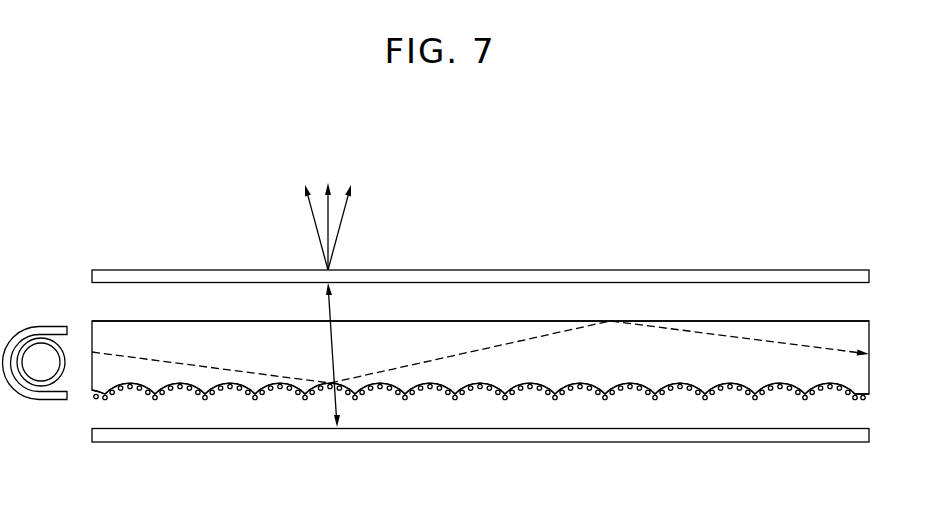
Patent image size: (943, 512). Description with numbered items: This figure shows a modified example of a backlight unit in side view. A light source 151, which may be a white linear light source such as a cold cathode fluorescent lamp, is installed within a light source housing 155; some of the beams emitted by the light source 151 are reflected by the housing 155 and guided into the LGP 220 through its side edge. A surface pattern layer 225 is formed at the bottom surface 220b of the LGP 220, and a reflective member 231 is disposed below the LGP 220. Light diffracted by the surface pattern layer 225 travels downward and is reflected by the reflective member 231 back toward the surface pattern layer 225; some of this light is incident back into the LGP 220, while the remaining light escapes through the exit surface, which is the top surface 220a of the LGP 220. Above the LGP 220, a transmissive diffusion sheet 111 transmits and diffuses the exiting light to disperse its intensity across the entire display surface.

The transmissive diffusion sheet 111 is at (817, 276).
The LGP 220 is at (740, 330).
The top surface 220a is at (527, 320).
The bottom surface 220b is at (456, 395).
The surface pattern layer 225 is at (506, 408).
The reflective member 231 is at (817, 435).
The light source 151 is at (41, 340).
The light source housing 155 is at (60, 400).